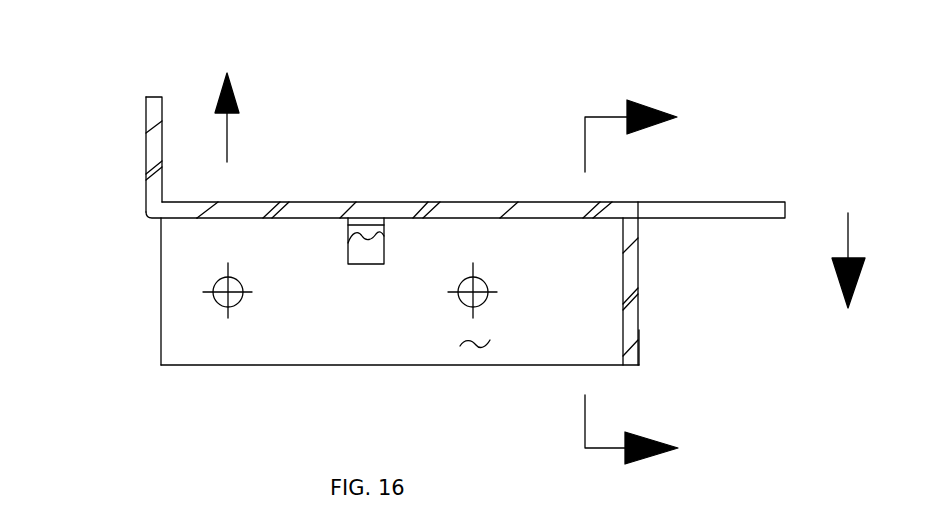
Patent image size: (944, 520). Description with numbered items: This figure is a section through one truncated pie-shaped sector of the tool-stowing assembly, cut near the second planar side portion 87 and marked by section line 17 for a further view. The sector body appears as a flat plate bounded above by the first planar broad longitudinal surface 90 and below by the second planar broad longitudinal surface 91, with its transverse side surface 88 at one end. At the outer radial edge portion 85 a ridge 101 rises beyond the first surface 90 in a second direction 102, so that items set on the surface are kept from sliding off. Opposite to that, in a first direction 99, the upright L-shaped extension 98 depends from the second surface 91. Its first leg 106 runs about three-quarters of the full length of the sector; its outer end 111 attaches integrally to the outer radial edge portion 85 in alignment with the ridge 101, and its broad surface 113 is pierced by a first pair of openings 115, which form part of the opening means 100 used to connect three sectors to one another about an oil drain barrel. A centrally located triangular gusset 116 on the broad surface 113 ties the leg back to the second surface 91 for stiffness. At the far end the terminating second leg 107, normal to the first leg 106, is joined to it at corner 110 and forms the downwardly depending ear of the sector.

The line 17- 17 is at (650, 282).
The outer radial edge portion 85 is at (146, 183).
The second planar side portion 87 is at (375, 202).
The side surface 88 is at (145, 102).
The first planar broad longitudinal surface 90 is at (448, 202).
The second planar broad longitudinal surface 91 is at (200, 218).
The upright L-shaped extension 98 is at (590, 292).
The first direction 99 is at (848, 227).
The opening means 100 is at (460, 303).
The ridge 101 is at (157, 158).
The second direction 102 is at (227, 143).
The first leg 106 is at (210, 340).
The second leg 107 is at (639, 316).
The corner 110 is at (638, 202).
The outer end 111 is at (161, 298).
The broad surface 113 is at (467, 350).
The openings 115 is at (237, 278).
The triangular gusset 116 is at (378, 237).